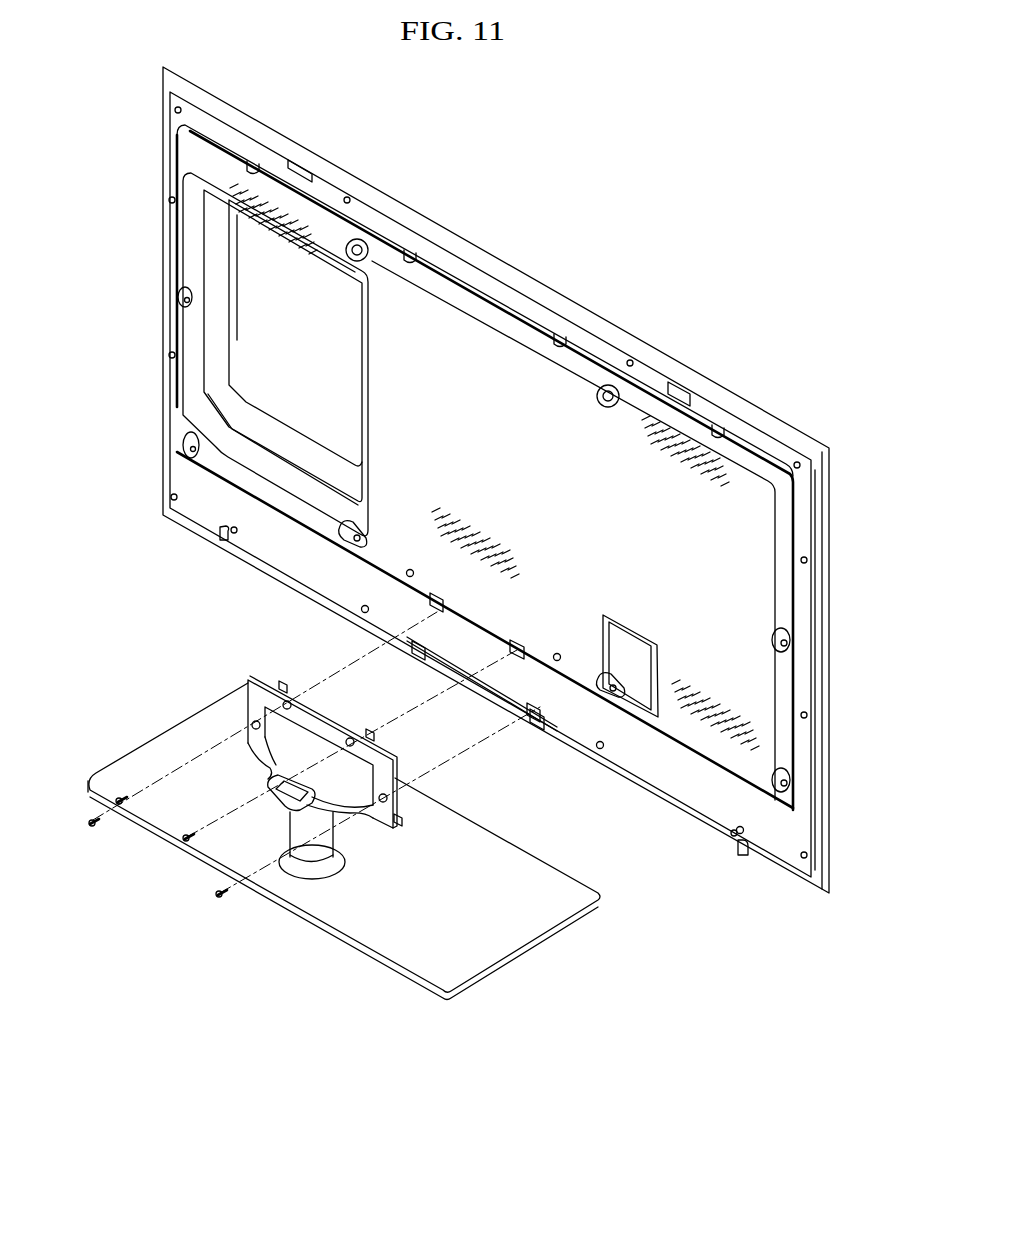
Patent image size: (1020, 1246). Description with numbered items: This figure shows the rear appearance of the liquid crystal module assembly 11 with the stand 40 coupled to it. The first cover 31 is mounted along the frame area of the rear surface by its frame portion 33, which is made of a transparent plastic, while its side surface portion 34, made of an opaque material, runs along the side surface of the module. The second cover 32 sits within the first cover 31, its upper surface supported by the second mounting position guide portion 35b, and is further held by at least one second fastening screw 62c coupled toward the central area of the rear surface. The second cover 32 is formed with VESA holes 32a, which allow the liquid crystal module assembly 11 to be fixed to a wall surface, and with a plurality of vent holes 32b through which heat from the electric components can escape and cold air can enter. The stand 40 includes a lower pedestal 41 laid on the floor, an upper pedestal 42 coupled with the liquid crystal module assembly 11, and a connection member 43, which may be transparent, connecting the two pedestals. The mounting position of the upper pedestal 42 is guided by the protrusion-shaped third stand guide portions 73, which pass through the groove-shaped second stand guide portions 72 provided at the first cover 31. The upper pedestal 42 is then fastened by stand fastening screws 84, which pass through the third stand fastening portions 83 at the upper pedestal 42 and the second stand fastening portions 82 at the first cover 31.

The liquid crystal module assembly 11 is at (642, 320).
The first cover 31 is at (485, 467).
The second cover 32 is at (757, 577).
The VESA holes 32a is at (360, 240).
The vent holes 32b is at (300, 237).
The frame portion 33 is at (470, 273).
The side surface portion 34 is at (530, 290).
The second mounting position guide portion 35b is at (253, 162).
The second fastening screw 62c is at (178, 297).
The second stand guide portions 72 is at (430, 596).
The second stand fastening portions 82 is at (443, 605).
The stand 40 is at (323, 847).
The lower pedestal 41 is at (520, 965).
The upper pedestal 42 is at (385, 822).
The connection member 43 is at (305, 858).
The third stand guide portions 73 is at (283, 680).
The third stand fastening portions 83 is at (284, 700).
The stand fastening screws 84 is at (101, 774).